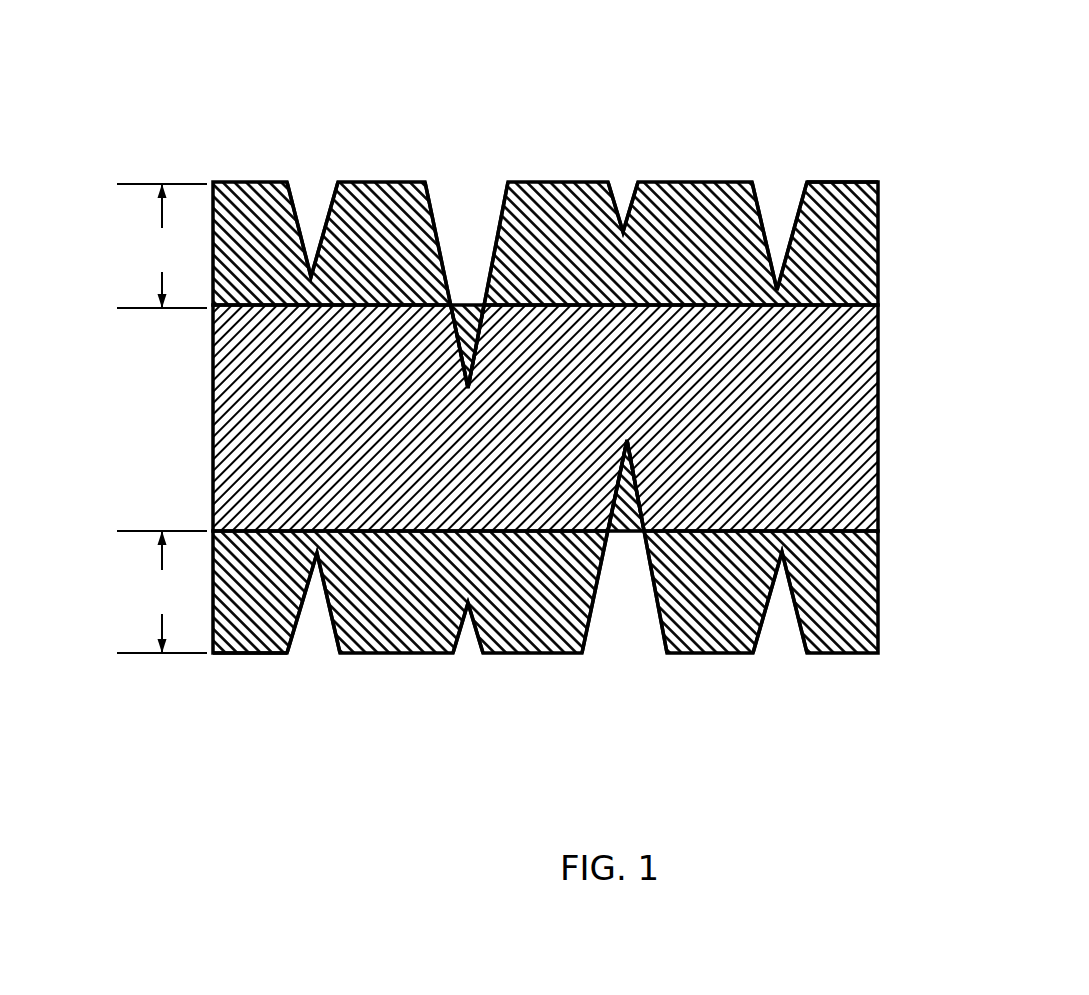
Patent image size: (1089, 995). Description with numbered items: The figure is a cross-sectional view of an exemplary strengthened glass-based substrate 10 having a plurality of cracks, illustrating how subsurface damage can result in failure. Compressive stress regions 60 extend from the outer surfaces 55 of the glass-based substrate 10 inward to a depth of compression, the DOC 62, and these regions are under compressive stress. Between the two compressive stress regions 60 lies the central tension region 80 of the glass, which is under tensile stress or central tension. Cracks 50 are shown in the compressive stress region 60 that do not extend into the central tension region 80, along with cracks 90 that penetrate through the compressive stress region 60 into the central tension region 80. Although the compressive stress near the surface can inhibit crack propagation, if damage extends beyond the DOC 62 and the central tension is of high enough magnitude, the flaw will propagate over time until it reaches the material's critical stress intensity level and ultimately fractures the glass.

The strengthened glass-based substrate 10 is at (592, 400).
The cracks 50 is at (317, 218).
The outer surface 55 is at (833, 182).
The compressive stress region 60 is at (878, 245).
The DOC (depth of compression) 62 is at (162, 418).
The central tension region 80 is at (840, 455).
The cracks 90 is at (464, 220).